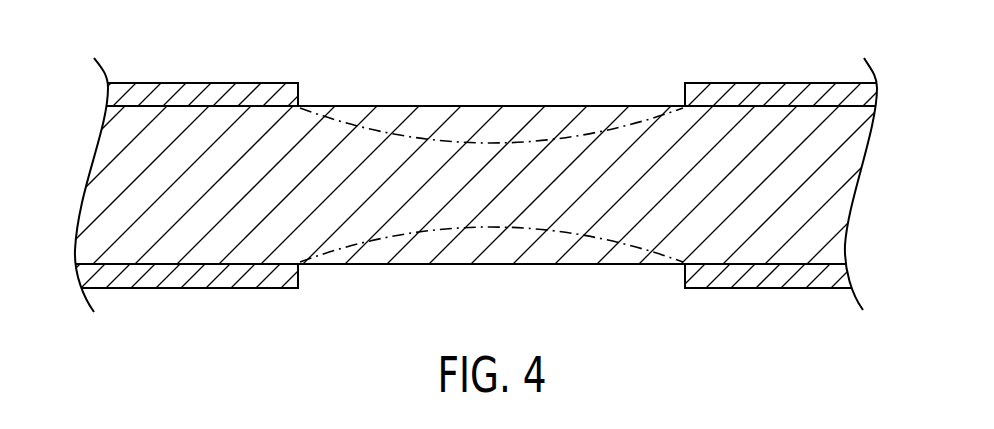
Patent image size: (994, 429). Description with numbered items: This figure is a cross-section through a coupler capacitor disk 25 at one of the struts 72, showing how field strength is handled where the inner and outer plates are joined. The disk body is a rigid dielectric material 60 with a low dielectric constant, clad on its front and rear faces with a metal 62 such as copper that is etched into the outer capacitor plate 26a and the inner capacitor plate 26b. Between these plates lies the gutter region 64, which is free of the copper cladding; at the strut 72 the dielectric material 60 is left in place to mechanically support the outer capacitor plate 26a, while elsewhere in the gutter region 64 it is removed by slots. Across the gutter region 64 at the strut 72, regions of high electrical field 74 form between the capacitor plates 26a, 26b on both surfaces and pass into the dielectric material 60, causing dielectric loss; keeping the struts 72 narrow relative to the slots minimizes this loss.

The capacitor disk 25 is at (70, 79).
The outer capacitor plate 26a is at (163, 83).
The inner capacitor plate 26b is at (827, 83).
The dielectric material 60 is at (835, 177).
The metal 62 is at (764, 83).
The gutter region 64 is at (394, 61).
The strut 72 is at (565, 106).
The region of high electrical field 74 is at (530, 228).